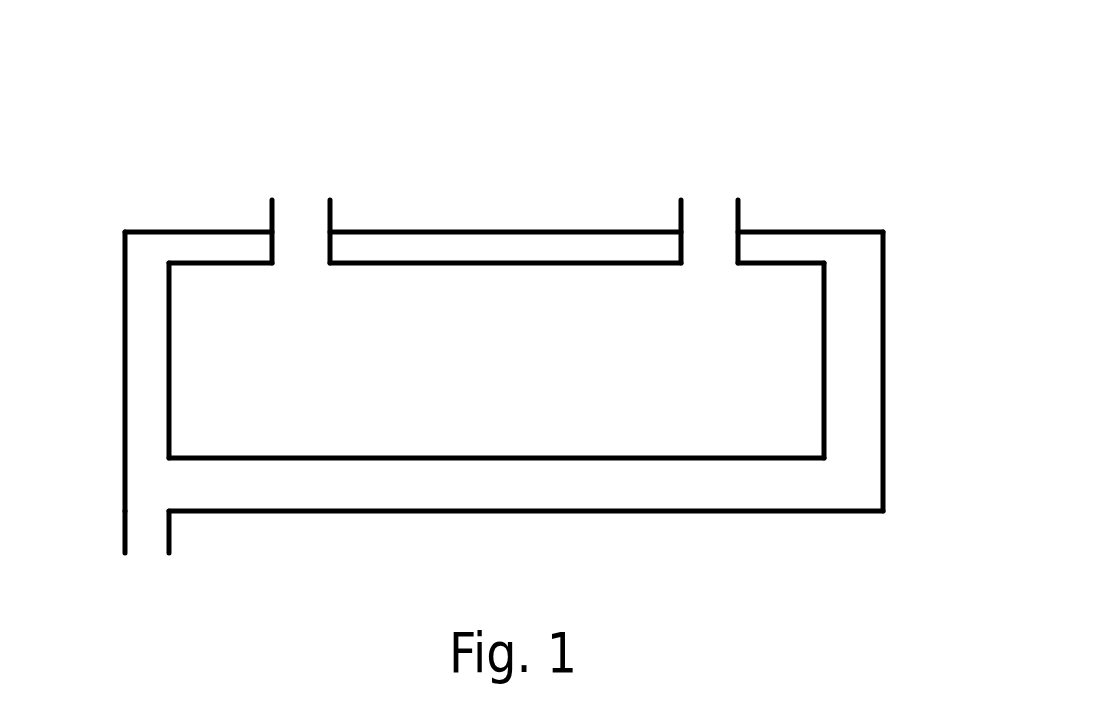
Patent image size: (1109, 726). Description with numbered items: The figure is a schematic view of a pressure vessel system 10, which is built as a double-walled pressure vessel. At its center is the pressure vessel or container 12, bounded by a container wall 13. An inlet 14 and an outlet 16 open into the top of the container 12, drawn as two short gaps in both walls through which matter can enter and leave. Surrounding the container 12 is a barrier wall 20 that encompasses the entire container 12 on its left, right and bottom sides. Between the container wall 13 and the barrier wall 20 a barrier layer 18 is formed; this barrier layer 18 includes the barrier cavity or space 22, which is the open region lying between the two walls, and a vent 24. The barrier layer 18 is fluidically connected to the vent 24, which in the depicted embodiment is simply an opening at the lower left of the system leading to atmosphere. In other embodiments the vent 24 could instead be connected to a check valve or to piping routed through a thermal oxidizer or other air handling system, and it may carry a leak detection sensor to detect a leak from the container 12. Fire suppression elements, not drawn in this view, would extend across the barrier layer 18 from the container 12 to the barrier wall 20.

The pressure vessel system 10 is at (796, 78).
The pressure vessel or container 12 is at (515, 373).
The container wall 13 is at (749, 462).
The inlet 14 is at (303, 210).
The outlet 16 is at (709, 198).
The barrier layer 18 is at (150, 339).
The barrier wall 20 is at (885, 327).
The barrier cavity or space 22 is at (500, 483).
The vent 24 is at (148, 533).